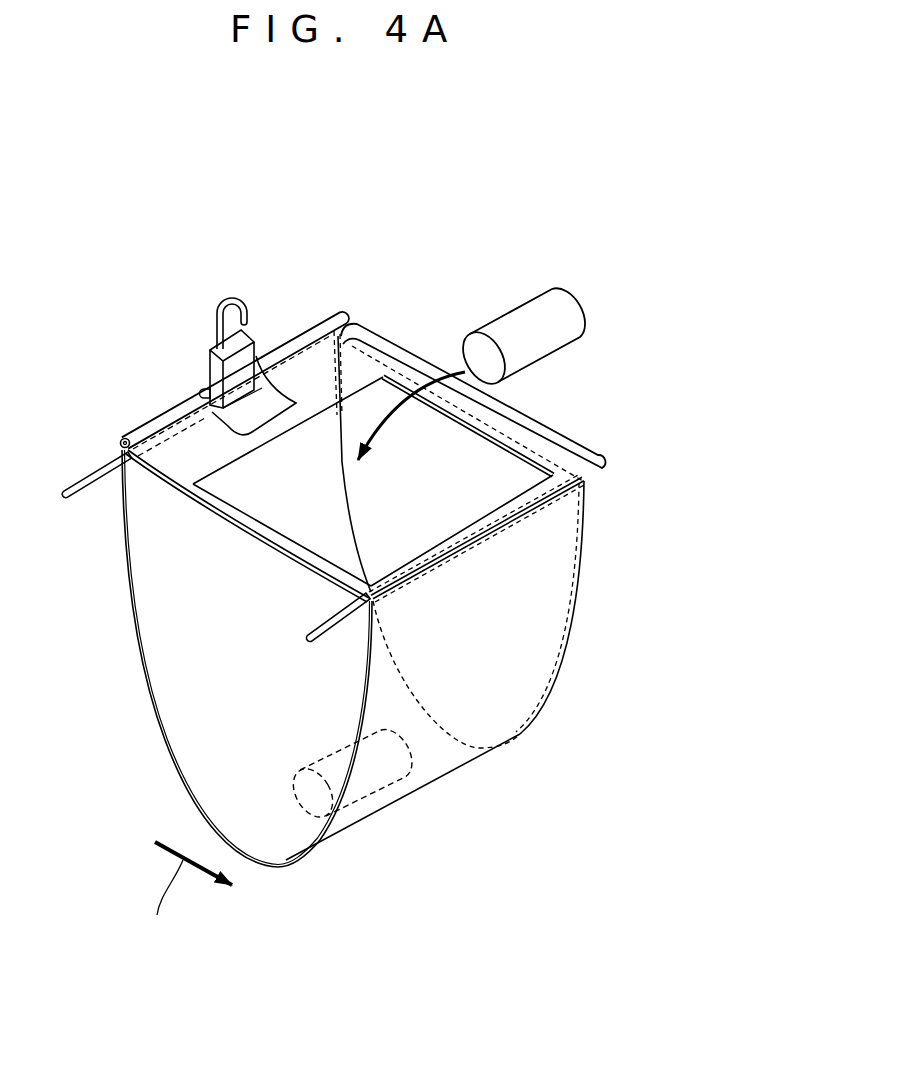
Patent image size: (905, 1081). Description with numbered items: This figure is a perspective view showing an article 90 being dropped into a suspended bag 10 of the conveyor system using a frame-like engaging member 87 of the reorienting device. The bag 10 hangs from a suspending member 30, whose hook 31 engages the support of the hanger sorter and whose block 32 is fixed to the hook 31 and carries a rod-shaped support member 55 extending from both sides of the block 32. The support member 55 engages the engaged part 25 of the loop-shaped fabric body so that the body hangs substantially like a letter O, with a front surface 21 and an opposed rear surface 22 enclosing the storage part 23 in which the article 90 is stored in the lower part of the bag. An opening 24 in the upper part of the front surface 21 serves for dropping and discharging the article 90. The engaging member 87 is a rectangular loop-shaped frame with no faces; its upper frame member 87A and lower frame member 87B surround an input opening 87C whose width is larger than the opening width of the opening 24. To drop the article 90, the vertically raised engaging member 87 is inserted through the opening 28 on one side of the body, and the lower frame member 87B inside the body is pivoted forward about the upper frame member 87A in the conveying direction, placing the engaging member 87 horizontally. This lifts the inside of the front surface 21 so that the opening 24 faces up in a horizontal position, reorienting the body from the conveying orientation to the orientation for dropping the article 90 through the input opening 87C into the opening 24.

The bag 10 is at (166, 188).
The front surface 21 is at (187, 470).
The rear surface 22 is at (213, 753).
The storage part 23 is at (230, 793).
The opening 24 is at (280, 516).
The engaged part 25 is at (316, 324).
The opening 28 is at (164, 665).
The suspending member 30 is at (207, 333).
The hook 31 is at (238, 298).
The block 32 is at (209, 362).
The support member 55 is at (259, 343).
The engaging member 87 is at (396, 322).
The upper frame member 87A is at (118, 464).
The lower frame member 87B is at (341, 640).
The input opening 87C is at (459, 484).
The article 90 is at (527, 312).